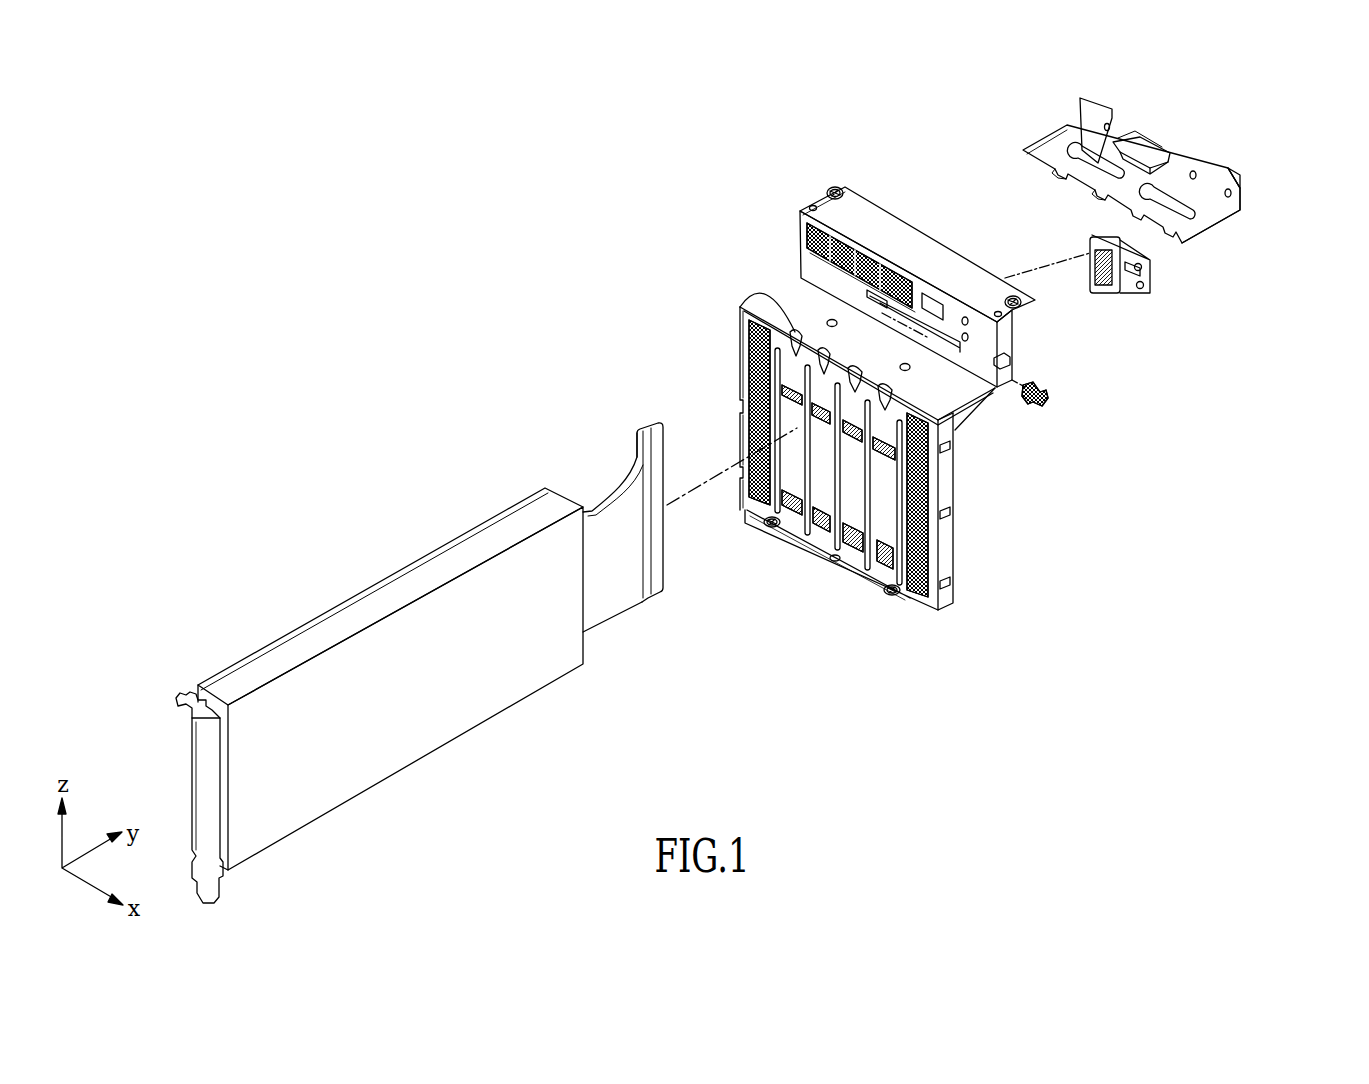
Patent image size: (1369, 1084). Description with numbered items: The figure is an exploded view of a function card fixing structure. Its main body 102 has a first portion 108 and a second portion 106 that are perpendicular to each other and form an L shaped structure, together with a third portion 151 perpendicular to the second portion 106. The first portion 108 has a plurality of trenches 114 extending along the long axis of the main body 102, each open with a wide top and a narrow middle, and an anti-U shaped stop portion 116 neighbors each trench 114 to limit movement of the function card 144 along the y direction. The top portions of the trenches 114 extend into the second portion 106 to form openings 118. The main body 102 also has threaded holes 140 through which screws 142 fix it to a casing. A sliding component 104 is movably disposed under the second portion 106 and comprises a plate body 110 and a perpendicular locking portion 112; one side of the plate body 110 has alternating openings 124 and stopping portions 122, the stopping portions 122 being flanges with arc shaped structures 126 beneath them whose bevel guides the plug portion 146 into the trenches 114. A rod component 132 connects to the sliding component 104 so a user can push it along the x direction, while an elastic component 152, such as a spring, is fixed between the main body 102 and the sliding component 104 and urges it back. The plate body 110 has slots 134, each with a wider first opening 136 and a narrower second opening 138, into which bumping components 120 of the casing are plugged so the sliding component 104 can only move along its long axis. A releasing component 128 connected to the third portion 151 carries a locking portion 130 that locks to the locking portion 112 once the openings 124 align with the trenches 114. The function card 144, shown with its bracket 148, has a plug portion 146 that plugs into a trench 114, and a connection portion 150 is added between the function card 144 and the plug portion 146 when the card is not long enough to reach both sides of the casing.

The main body 102 is at (1090, 355).
The sliding component 104 is at (1080, 232).
The second portion 106 is at (952, 392).
The first portion 108 is at (890, 503).
The plate body 110 is at (1217, 222).
The locking portion 112 is at (1235, 195).
The trenches 114 is at (746, 306).
The stop portion 116 is at (793, 392).
The openings 118 is at (948, 408).
The bumping components 120 is at (830, 320).
The stopping portions 122 is at (1075, 180).
The openings 124 is at (1060, 168).
The arc shaped structure 126 is at (1160, 243).
The releasing component 128 is at (1150, 283).
The locking portion 130 is at (1105, 295).
The rod component 132 is at (1168, 140).
The slots 134 is at (1173, 125).
The first opening 136 is at (1077, 145).
The second opening 138 is at (1213, 80).
The threaded holes 140 is at (825, 562).
The screws 142 is at (878, 593).
The function card 144 is at (540, 500).
The plug portion 146 is at (660, 431).
The bracket 148 is at (200, 738).
The connection portion 150 is at (613, 602).
The third portion 151 is at (983, 333).
The elastic component 152 is at (1031, 404).